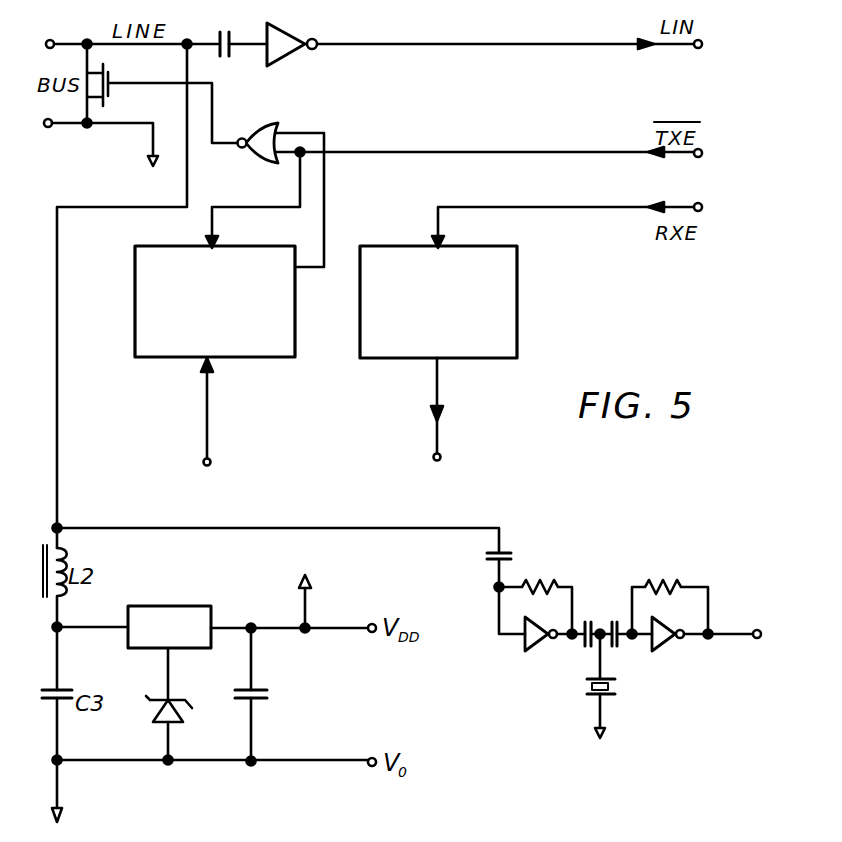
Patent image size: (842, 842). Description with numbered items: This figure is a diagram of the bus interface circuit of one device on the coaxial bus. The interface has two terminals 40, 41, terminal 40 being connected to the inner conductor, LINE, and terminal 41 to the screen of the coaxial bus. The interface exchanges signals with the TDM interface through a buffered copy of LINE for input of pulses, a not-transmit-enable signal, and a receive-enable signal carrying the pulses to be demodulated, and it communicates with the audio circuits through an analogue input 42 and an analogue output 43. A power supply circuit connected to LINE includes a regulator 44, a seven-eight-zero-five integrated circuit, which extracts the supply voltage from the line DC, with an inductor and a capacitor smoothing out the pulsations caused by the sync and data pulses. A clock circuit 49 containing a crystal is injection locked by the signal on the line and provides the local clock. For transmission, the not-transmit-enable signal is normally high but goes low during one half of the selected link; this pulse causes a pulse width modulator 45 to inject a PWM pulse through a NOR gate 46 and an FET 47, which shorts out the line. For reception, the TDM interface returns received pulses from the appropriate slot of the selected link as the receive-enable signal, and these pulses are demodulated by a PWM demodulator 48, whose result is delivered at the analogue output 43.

The terminal 40 is at (50, 40).
The terminal 41 is at (48, 128).
The analogue input 42 is at (211, 459).
The analogue output 43 is at (442, 454).
The regulator 44 is at (171, 591).
The pulse width modulator 45 is at (295, 307).
The NOR gate 46 is at (262, 122).
The FET 47 is at (103, 99).
The PWM demodulator 48 is at (517, 292).
The clock circuit 49 is at (552, 674).